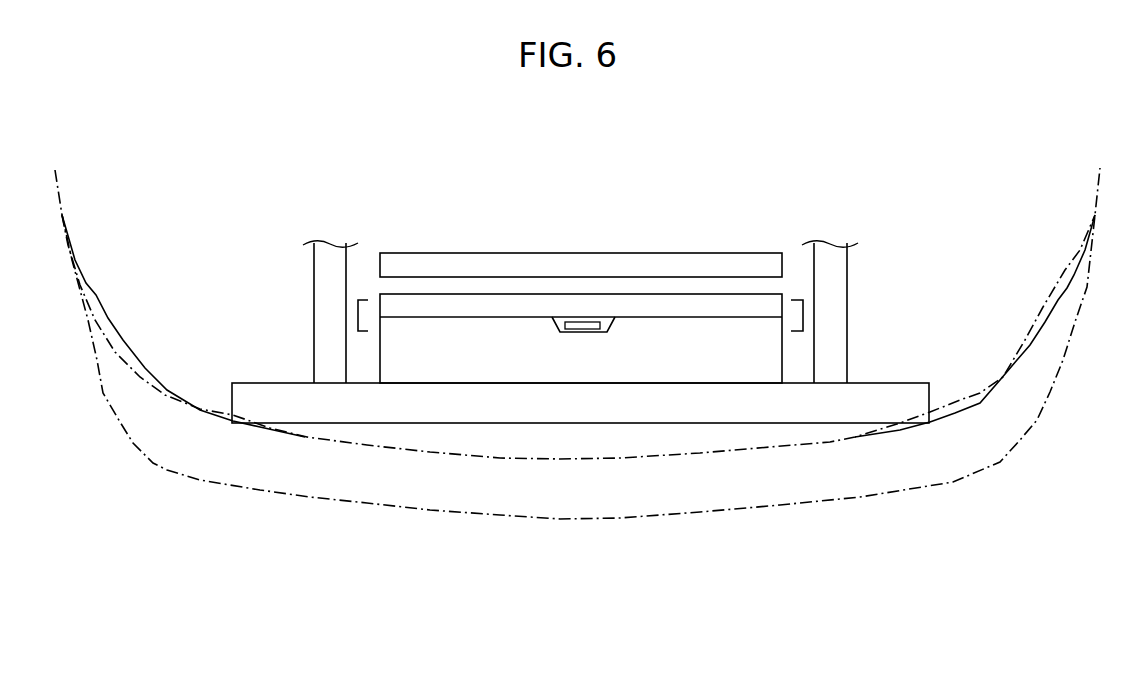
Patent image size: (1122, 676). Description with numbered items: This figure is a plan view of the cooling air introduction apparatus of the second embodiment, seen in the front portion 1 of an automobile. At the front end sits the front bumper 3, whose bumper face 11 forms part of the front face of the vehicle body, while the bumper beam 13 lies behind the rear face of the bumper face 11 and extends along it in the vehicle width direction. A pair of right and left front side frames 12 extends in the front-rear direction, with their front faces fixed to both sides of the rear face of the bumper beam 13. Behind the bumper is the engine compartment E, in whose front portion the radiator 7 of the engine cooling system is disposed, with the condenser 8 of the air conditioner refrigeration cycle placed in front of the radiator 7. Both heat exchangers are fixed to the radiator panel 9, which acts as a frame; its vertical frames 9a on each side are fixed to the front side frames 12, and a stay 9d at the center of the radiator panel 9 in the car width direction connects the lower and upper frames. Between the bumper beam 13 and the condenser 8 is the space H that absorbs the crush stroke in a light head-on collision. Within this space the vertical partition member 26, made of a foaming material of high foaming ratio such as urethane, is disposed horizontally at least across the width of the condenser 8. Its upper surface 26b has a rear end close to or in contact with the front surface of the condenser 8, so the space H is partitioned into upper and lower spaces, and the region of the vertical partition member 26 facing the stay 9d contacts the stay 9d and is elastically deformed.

The front portion 1 is at (1033, 477).
The front bumper 3 is at (957, 483).
The bumper face 11 is at (862, 498).
The radiator 7 is at (678, 268).
The condenser 8 is at (448, 302).
The radiator panel 9 is at (795, 290).
The vertical frame 9a is at (357, 313).
The stay 9d is at (583, 332).
The front side frame 12 is at (320, 270).
The bumper beam 13 is at (697, 408).
The vertical partition member 26 is at (377, 362).
The upper surface 26b is at (437, 363).
The engine compartment E is at (548, 156).
The space H is at (800, 362).